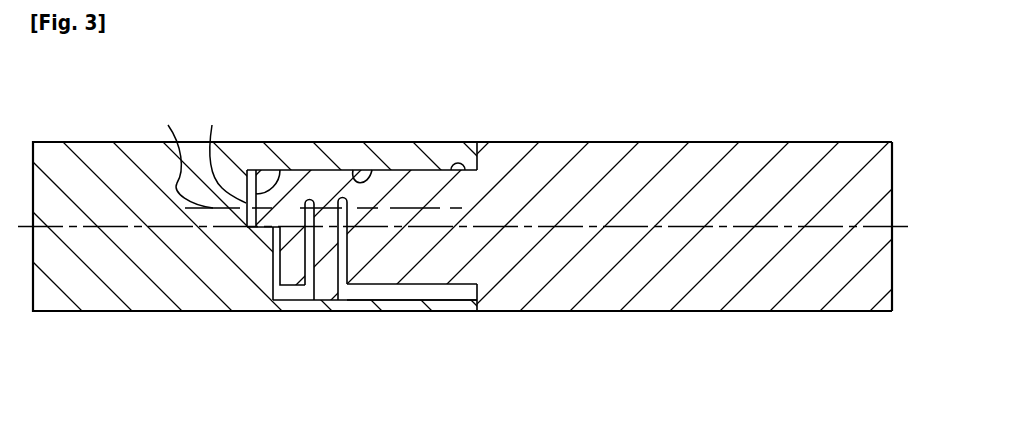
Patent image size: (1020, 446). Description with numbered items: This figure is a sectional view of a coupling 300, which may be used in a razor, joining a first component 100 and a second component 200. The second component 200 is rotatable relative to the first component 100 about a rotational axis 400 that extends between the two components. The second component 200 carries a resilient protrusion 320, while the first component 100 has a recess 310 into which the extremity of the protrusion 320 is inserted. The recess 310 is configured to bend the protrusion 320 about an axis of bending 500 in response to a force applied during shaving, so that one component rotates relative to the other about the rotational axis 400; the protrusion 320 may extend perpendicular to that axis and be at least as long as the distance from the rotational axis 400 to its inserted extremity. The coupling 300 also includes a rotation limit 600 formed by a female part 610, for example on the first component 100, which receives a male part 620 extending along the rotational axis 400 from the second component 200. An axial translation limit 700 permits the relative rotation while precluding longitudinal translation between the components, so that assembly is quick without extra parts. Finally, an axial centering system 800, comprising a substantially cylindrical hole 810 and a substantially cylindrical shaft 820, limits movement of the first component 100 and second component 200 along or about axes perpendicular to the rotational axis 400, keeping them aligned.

The first component 100 is at (98, 153).
The second component 200 is at (798, 152).
The coupling 300 is at (353, 308).
The recess 310 is at (382, 293).
The resilient protrusion 320 is at (325, 287).
The rotational axis 400 is at (873, 228).
The axis of bending 500 is at (172, 155).
The rotation limit 600 is at (215, 257).
The female part 610 is at (219, 153).
The male part 620 is at (280, 170).
The axial translation limit 700 is at (493, 128).
The axial centering system 800 is at (362, 221).
The hole 810 is at (352, 170).
The shaft 820 is at (428, 270).